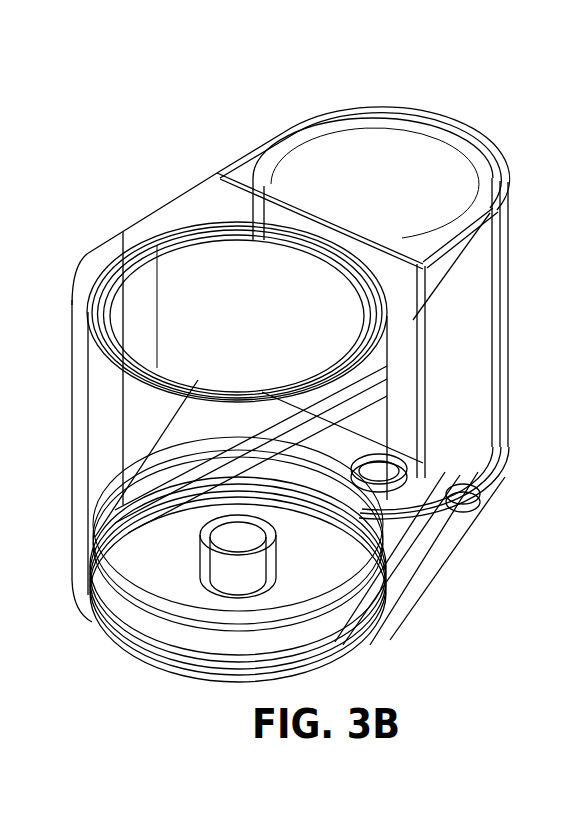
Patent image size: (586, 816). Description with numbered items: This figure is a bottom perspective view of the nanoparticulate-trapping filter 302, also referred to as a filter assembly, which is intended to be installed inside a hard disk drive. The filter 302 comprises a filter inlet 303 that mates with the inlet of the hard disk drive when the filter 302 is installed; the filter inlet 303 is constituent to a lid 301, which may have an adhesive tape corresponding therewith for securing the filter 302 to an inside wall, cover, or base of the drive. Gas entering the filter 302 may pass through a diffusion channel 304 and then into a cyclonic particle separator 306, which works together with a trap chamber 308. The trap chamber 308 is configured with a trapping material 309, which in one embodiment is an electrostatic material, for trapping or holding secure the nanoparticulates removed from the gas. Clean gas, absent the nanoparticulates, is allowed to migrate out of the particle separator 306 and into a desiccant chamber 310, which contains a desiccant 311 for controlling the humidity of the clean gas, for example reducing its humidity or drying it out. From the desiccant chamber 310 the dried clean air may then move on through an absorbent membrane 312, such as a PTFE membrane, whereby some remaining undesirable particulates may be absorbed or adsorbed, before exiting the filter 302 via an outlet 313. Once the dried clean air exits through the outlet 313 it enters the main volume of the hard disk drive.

The lid 301 is at (400, 608).
The filter 302 is at (158, 105).
The filter inlet 303 is at (478, 528).
The diffusion channel 304 is at (436, 568).
The cyclonic particle separator 306 is at (123, 462).
The trap chamber 308 is at (105, 275).
The trapping material 309 is at (183, 277).
The desiccant chamber 310 is at (493, 252).
The desiccant 311 is at (488, 348).
The absorbent membrane 312 is at (450, 180).
The outlet 313 is at (366, 183).